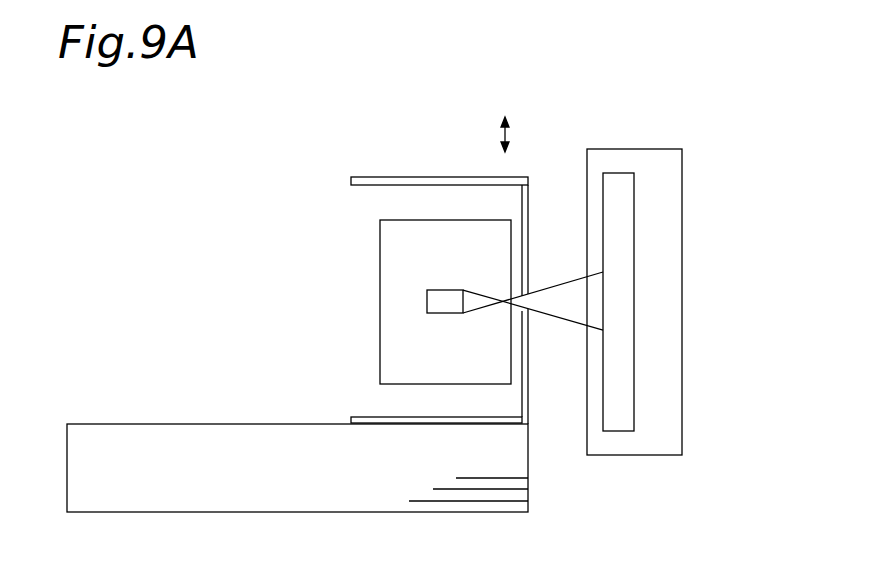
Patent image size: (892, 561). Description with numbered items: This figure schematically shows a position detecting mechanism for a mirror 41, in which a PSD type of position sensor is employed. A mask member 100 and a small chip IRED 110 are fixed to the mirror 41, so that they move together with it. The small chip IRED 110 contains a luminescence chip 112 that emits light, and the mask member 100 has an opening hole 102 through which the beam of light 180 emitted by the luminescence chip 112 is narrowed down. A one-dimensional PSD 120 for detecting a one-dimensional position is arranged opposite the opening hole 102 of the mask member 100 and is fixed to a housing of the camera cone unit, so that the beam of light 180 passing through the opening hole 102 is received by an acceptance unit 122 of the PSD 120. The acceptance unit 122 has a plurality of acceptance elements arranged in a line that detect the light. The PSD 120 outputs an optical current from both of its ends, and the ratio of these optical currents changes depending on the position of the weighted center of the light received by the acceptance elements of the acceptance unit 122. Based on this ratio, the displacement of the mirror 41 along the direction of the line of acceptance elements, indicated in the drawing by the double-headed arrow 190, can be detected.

The mask member 100 is at (452, 177).
The small chip IRED 110 is at (380, 249).
The luminescence chip 112 is at (427, 300).
The beam of light 180 is at (565, 283).
The opening hole 102 is at (524, 302).
The one-dimensional PSD 120 is at (640, 149).
The acceptance unit 122 is at (634, 300).
The movement direction 190 is at (505, 128).
The mirror 41 is at (185, 424).